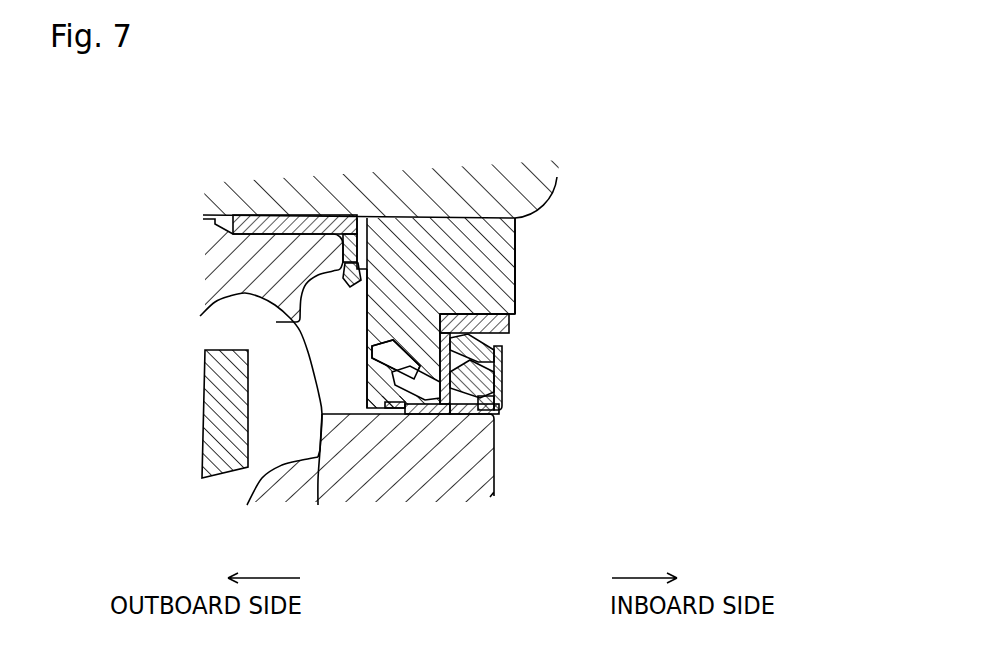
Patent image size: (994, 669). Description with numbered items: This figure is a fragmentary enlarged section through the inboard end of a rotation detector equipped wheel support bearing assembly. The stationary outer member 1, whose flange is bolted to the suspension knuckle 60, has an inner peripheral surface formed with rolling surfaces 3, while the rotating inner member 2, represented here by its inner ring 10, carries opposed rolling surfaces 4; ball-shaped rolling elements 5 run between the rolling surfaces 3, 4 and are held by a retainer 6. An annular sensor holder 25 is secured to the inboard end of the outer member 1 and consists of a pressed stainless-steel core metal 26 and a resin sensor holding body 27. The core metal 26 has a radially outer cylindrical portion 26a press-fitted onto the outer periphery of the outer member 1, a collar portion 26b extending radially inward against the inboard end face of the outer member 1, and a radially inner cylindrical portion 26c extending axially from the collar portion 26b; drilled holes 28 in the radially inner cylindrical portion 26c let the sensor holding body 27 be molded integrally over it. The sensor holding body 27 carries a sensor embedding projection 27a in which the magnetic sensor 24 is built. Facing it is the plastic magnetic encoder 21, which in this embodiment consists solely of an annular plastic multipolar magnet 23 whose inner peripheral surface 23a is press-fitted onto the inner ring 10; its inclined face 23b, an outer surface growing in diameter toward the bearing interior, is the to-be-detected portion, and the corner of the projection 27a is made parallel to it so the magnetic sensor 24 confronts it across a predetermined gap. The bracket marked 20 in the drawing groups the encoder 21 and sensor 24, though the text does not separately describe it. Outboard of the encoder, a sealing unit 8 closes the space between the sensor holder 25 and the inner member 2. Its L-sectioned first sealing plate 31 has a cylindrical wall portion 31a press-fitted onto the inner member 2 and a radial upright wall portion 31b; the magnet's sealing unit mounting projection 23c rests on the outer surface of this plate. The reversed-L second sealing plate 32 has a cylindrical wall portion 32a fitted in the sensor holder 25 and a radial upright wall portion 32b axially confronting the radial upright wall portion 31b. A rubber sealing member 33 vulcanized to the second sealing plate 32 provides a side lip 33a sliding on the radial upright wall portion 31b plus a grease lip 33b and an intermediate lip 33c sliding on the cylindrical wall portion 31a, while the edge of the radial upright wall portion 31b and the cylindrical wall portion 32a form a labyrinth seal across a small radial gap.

The outer member 1 is at (245, 268).
The inner member 2 is at (435, 492).
The inner ring 10 is at (493, 465).
The rolling surfaces 3 is at (240, 300).
The rolling surfaces 4 is at (247, 505).
The rolling elements 5 is at (320, 416).
The retainer 6 is at (213, 438).
The sealing unit 8 is at (573, 343).
The seal unit 20 is at (383, 118).
The plastic magnetic encoder 21 is at (343, 258).
The plastic multipolar magnet 23 is at (366, 378).
The inner peripheral surface 23a is at (372, 414).
The inclined face 23b is at (367, 322).
The sealing unit mounting projection 23c is at (380, 414).
The magnetic sensor 24 is at (415, 322).
The sensor holder 25 is at (528, 96).
The core metal 26 is at (486, 306).
The radially outer cylindrical portion 26a is at (318, 215).
The collar portion 26b is at (367, 247).
The radially inner cylindrical portion 26c is at (513, 275).
The sensor holding body 27 is at (440, 305).
The sensor embedding projection 27a is at (398, 312).
The drilled hole 28 is at (412, 357).
The first sealing plate 31 is at (505, 405).
The cylindrical wall portion 31a is at (462, 415).
The radial upright wall portion 31b is at (502, 373).
The second sealing plate 32 is at (437, 414).
The cylindrical wall portion 32a is at (467, 315).
The radial upright wall portion 32b is at (398, 414).
The sealing member 33 is at (480, 378).
The side lip 33a is at (503, 363).
The grease lip 33b is at (455, 414).
The intermediate lip 33c is at (495, 410).
The knuckle 60 is at (547, 203).